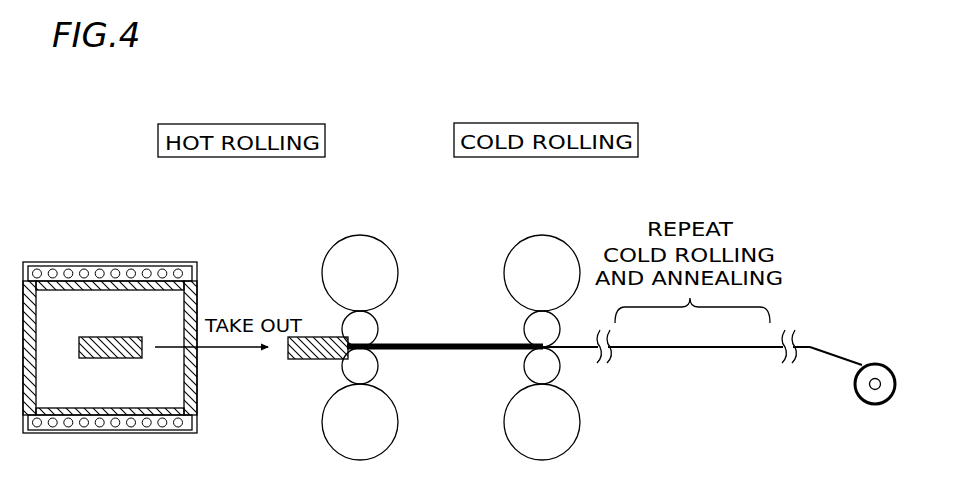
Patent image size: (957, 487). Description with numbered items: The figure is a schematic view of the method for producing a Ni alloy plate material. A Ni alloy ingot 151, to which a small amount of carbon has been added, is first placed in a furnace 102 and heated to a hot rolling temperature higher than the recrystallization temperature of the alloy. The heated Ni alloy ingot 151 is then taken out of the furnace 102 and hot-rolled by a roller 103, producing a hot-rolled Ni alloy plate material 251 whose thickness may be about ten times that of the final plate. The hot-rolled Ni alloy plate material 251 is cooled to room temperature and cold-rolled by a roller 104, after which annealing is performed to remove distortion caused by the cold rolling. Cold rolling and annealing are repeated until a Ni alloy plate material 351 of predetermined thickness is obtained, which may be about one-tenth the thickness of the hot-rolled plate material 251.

The furnace 102 is at (40, 253).
The Ni alloy ingot 151 is at (108, 337).
The roller 103 is at (359, 233).
The hot-rolled Ni alloy plate material 251 is at (444, 344).
The roller 104 is at (546, 233).
The Ni alloy plate material 351 is at (886, 364).